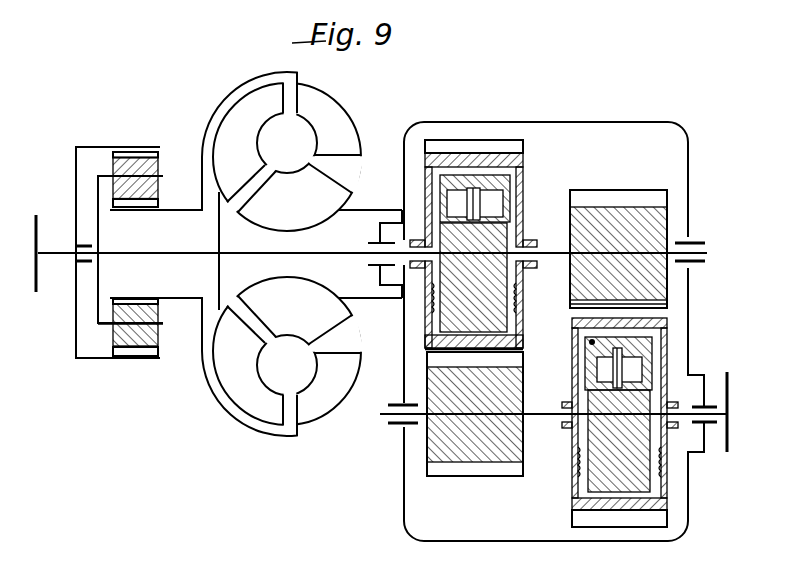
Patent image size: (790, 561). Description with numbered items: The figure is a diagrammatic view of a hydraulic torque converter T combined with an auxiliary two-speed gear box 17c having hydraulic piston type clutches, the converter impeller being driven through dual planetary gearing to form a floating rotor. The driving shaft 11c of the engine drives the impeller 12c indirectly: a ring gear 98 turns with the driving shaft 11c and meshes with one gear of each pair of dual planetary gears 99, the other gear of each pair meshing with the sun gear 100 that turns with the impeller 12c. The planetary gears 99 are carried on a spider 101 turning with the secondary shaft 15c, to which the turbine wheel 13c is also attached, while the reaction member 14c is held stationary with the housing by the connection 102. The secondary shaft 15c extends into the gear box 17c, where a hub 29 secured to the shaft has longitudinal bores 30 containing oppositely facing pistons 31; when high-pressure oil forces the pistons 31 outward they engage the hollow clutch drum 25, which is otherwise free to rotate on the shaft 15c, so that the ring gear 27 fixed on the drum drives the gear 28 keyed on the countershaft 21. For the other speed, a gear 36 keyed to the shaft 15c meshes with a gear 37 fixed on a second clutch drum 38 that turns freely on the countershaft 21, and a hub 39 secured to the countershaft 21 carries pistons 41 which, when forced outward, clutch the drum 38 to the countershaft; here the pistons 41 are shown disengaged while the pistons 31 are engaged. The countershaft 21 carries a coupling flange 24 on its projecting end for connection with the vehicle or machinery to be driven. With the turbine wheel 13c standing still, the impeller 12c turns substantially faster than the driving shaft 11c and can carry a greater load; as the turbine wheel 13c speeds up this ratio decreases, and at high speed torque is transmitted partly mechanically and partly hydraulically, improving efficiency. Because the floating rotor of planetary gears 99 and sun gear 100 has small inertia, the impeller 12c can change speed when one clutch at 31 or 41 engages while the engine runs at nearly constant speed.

The hydraulic torque converter T is at (303, 244).
The driving shaft 11c is at (57, 258).
The impeller 12c is at (343, 103).
The turbine wheel 13c is at (242, 98).
The reaction member 14c is at (299, 232).
The secondary shaft 15c is at (128, 258).
The auxiliary gear box 17c is at (628, 123).
The countershaft 21 is at (388, 420).
The coupling flange 24 is at (727, 384).
The clutch drum 25 is at (523, 180).
The ring gear 27 is at (477, 147).
The gear 28 is at (452, 468).
The hub 29 is at (507, 247).
The longitudinal bores 30 is at (472, 195).
The pistons 31 is at (500, 177).
The gear 36 is at (600, 195).
The gear 37 is at (590, 520).
The clutch drum 38 is at (575, 492).
The hub 39 is at (580, 438).
The pistons 41 is at (590, 342).
The ring gear 98 is at (133, 150).
The dual planetary gears 99 is at (113, 168).
The sun gear 100 is at (126, 208).
The spider 101 is at (97, 215).
The connection 102 is at (374, 300).